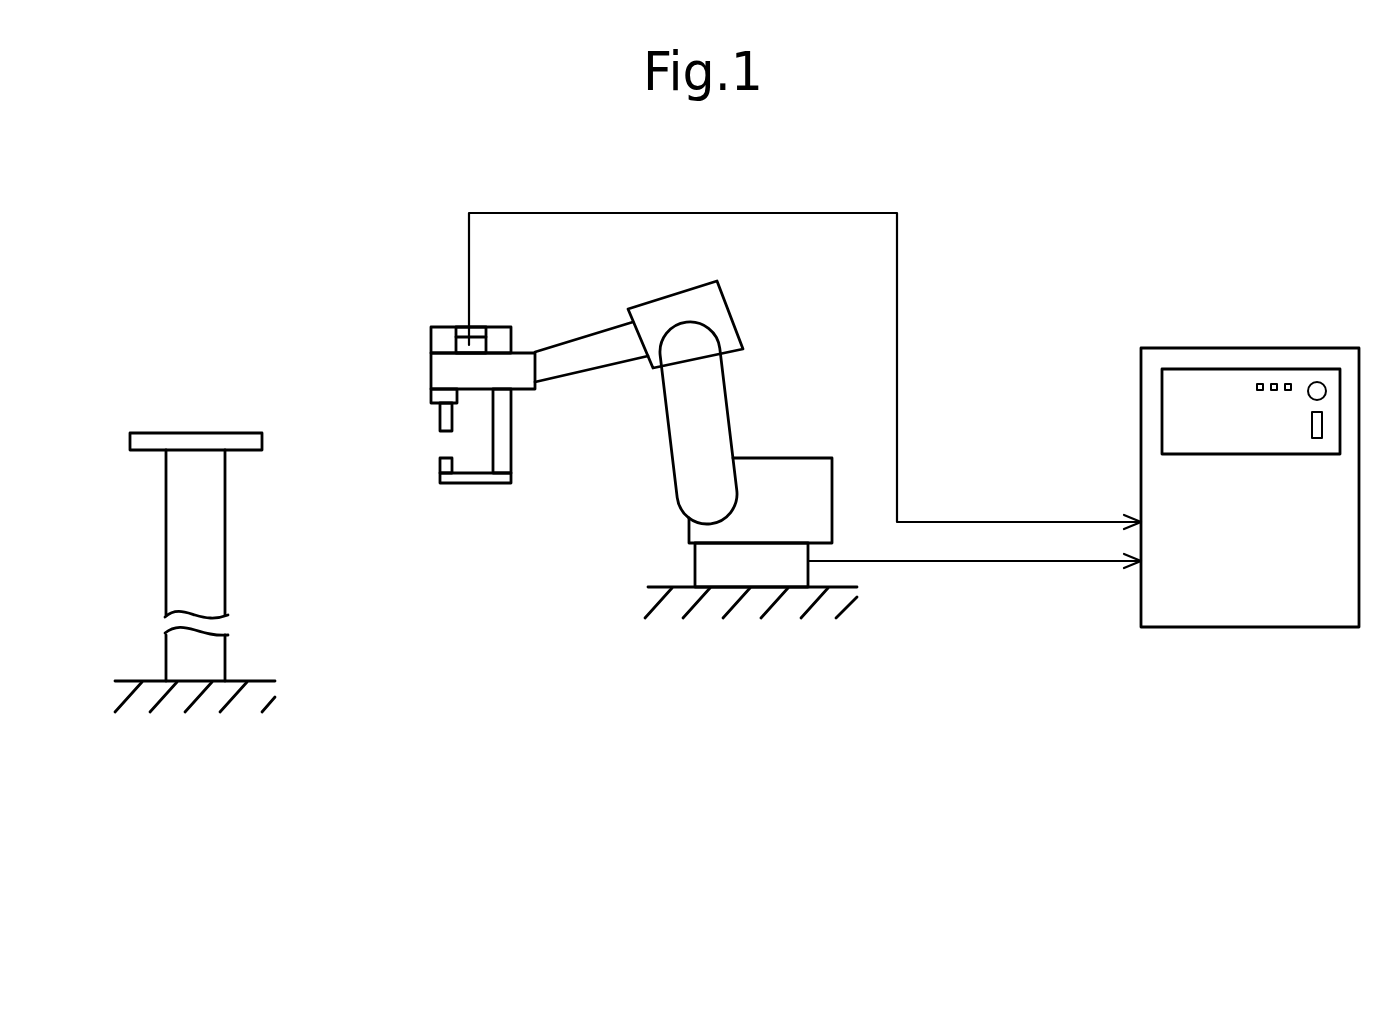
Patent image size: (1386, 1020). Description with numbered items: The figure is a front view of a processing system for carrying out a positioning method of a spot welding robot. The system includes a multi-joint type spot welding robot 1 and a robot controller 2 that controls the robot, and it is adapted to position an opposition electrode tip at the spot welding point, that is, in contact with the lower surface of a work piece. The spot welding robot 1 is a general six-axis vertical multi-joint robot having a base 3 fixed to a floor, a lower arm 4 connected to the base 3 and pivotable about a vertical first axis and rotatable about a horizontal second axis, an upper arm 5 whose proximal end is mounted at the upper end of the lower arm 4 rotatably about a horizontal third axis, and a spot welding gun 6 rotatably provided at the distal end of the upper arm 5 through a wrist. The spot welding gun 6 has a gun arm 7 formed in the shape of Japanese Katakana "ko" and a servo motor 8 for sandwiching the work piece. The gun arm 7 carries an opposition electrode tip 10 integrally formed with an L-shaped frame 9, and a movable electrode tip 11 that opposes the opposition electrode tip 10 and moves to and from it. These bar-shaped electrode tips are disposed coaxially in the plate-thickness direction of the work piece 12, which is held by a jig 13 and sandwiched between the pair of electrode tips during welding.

The spot welding robot 1 is at (578, 513).
The robot controller 2 is at (1238, 348).
The base 3 is at (695, 560).
The lower arm 4 is at (717, 420).
The upper arm 5 is at (590, 340).
The spot welding gun 6 is at (420, 368).
The gun arm 7 is at (507, 463).
The servo motor 8 is at (467, 337).
The L-shaped frame 9 is at (507, 433).
The opposition electrode tip 10 is at (438, 463).
The movable electrode tip 11 is at (438, 418).
The work piece 12 is at (175, 437).
The jig 13 is at (185, 527).